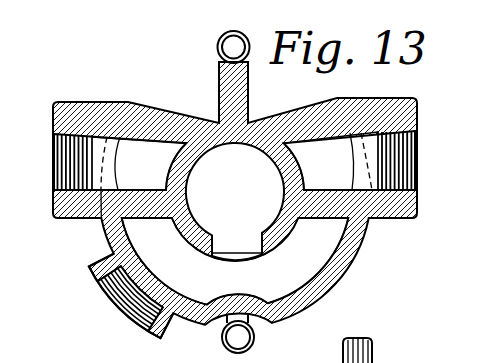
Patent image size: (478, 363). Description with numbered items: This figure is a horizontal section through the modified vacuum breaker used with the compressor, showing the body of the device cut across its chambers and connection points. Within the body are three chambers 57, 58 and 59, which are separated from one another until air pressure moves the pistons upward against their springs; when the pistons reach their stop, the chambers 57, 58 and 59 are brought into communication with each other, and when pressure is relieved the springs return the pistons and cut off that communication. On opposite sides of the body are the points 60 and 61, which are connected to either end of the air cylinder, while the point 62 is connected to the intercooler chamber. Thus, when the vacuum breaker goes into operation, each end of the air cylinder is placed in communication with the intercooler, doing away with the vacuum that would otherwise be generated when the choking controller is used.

The chamber 57 is at (139, 163).
The chamber 58 is at (331, 161).
The chamber 59 is at (235, 261).
The point 60 is at (54, 163).
The point 61 is at (417, 158).
The point 62 is at (134, 314).